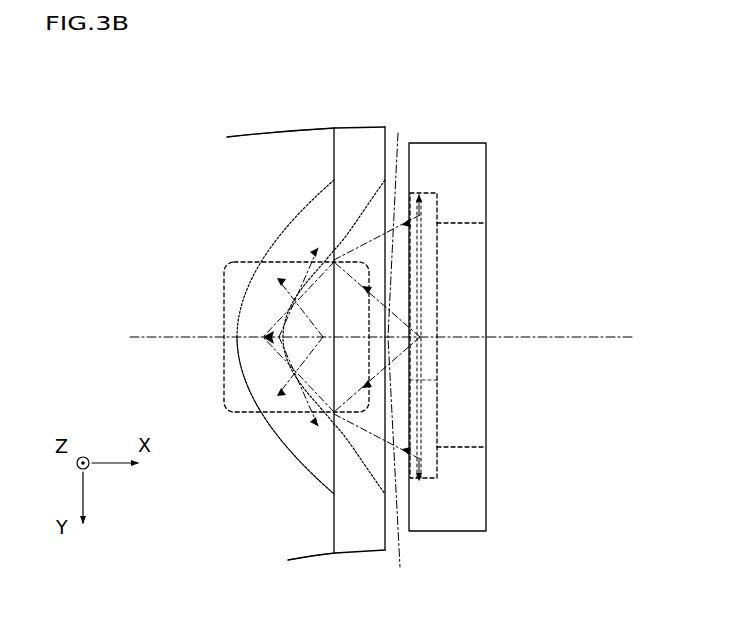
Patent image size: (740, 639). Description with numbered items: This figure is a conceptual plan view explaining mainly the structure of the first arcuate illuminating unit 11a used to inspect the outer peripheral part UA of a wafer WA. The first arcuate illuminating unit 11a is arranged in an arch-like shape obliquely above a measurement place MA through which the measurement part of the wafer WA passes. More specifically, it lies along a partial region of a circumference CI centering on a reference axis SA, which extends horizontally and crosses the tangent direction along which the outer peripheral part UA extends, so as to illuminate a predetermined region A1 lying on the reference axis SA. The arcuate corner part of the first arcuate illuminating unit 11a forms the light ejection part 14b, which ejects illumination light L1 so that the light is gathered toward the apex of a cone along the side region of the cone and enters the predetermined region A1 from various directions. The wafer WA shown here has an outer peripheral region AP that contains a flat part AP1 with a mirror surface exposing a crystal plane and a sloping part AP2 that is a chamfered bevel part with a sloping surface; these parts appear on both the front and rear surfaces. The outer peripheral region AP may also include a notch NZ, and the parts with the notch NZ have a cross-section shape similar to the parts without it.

The first arcuate illuminating unit 11a is at (486, 188).
The light ejection part 14b is at (437, 236).
The circumference CI is at (423, 290).
The illumination light L1 is at (341, 349).
The reference axis SA is at (553, 341).
The notch NZ is at (350, 432).
The outer peripheral region AP is at (262, 301).
The flat part AP1 is at (276, 145).
The sloping part AP2 is at (252, 75).
The wafer WA is at (233, 124).
The outer peripheral part UA is at (287, 546).
The measurement place MA is at (172, 269).
The predetermined region A1 is at (284, 413).